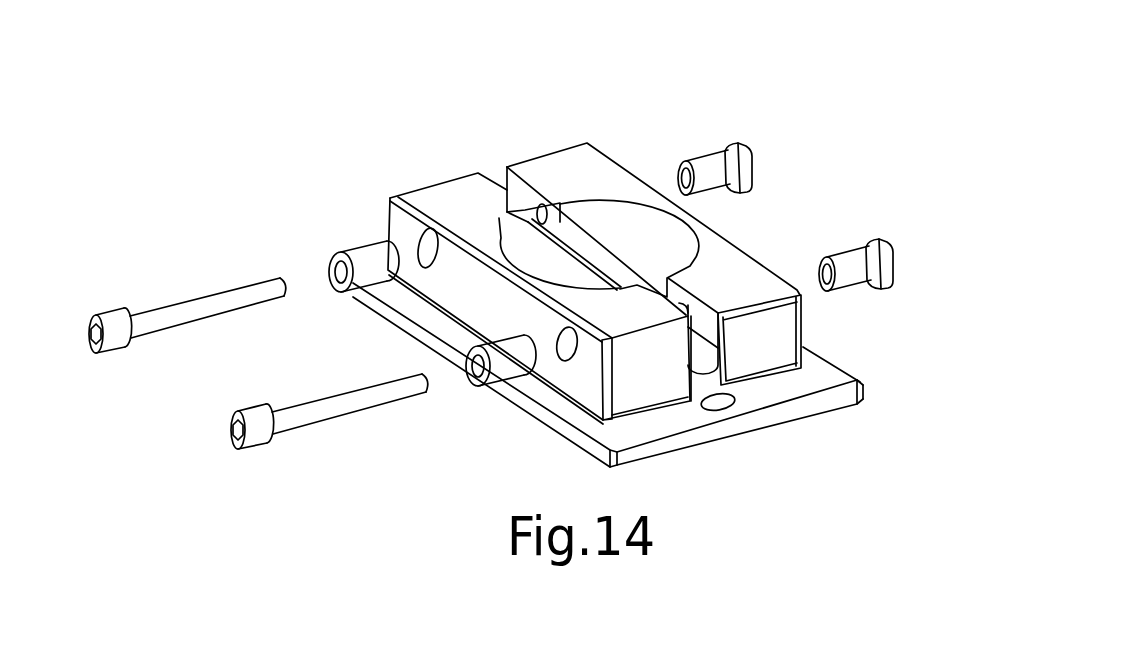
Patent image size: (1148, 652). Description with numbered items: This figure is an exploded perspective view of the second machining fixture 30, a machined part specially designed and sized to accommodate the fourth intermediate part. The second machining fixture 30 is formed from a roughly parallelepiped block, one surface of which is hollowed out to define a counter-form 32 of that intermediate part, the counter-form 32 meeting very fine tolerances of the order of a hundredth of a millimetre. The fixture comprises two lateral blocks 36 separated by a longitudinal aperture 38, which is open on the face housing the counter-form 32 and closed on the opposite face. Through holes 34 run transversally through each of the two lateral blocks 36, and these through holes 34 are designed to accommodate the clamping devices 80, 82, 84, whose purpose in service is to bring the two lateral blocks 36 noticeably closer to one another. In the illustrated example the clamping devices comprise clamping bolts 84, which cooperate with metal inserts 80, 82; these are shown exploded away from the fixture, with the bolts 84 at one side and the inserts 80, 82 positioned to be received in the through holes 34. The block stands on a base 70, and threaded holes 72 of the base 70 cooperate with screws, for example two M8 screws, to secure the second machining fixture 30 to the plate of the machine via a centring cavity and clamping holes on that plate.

The second machining fixture 30 is at (222, 153).
The counter-form 32 is at (632, 237).
The through holes 34 is at (427, 252).
The lateral blocks 36 is at (773, 350).
The longitudinal aperture 38 is at (513, 183).
The base 70 is at (828, 372).
The threaded holes 72 is at (718, 404).
The metal inserts 80 is at (703, 165).
The metal inserts 82 is at (370, 253).
The clamping bolts 84 is at (167, 318).